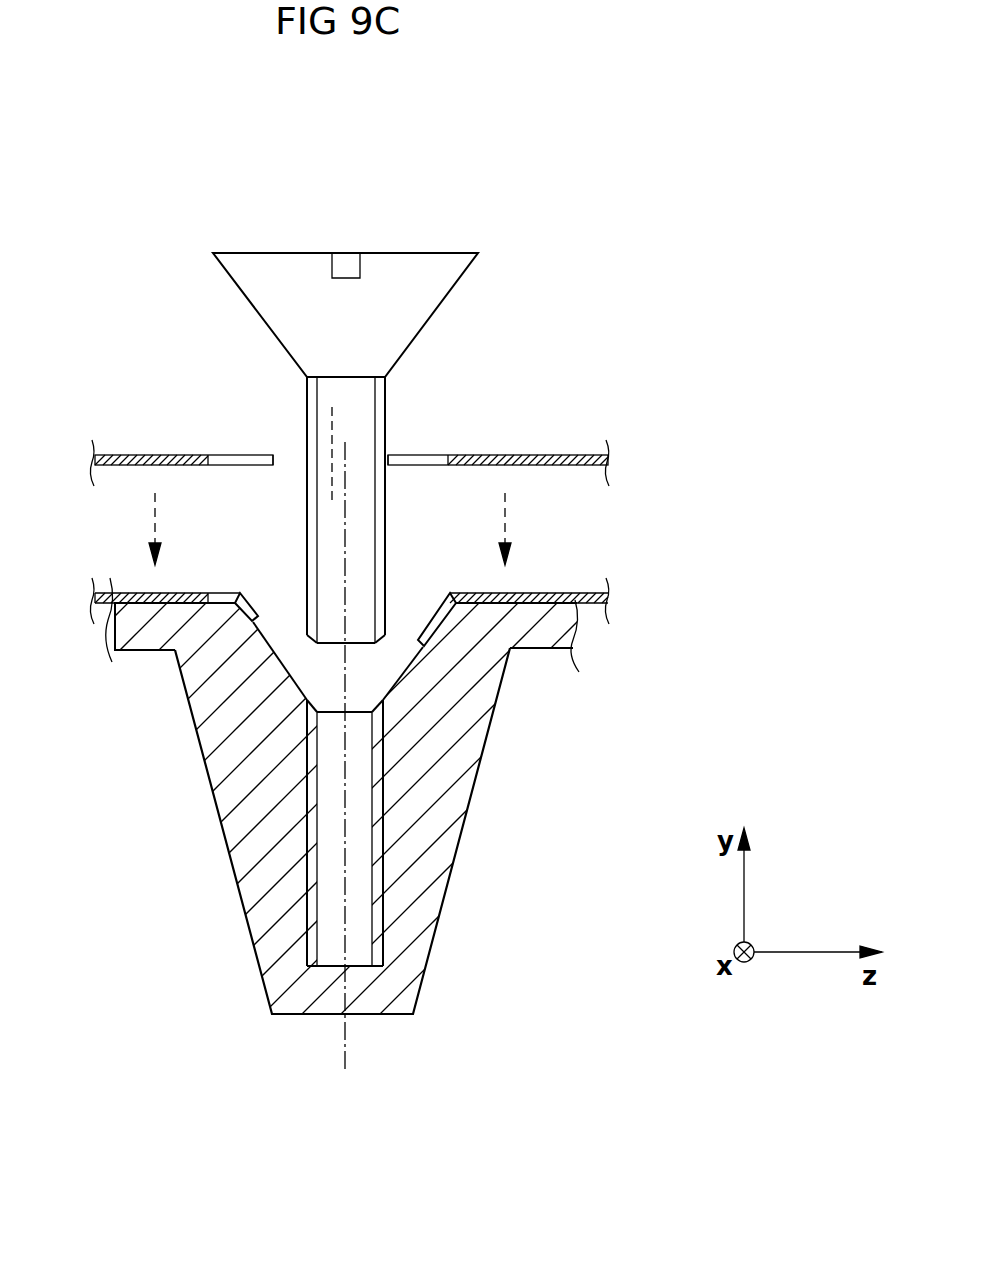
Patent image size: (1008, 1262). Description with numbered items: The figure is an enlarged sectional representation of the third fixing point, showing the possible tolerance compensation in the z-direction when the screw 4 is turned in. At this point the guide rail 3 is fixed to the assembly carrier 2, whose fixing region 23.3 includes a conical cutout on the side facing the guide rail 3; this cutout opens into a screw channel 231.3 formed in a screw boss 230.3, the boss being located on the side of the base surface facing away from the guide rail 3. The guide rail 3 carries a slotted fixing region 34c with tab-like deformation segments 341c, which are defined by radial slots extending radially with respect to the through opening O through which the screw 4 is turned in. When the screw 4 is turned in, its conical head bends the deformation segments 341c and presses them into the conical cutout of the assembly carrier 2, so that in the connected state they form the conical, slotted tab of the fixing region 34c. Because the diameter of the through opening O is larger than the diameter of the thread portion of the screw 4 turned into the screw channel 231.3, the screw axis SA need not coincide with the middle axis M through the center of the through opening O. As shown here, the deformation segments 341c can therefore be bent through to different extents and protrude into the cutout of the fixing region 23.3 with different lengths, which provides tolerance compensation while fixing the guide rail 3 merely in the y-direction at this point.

The screw 4 is at (398, 223).
The middle axis M is at (330, 427).
The through opening O is at (293, 463).
The screw axis SA is at (345, 1035).
The guide rail 3 is at (572, 453).
The fixing region 34c is at (441, 432).
The deformation segments 341c is at (240, 460).
The assembly carrier 2 is at (499, 818).
The fixing region 23.3 is at (448, 1010).
The screw boss 230.3 is at (405, 672).
The screw channel 231.3 is at (363, 865).